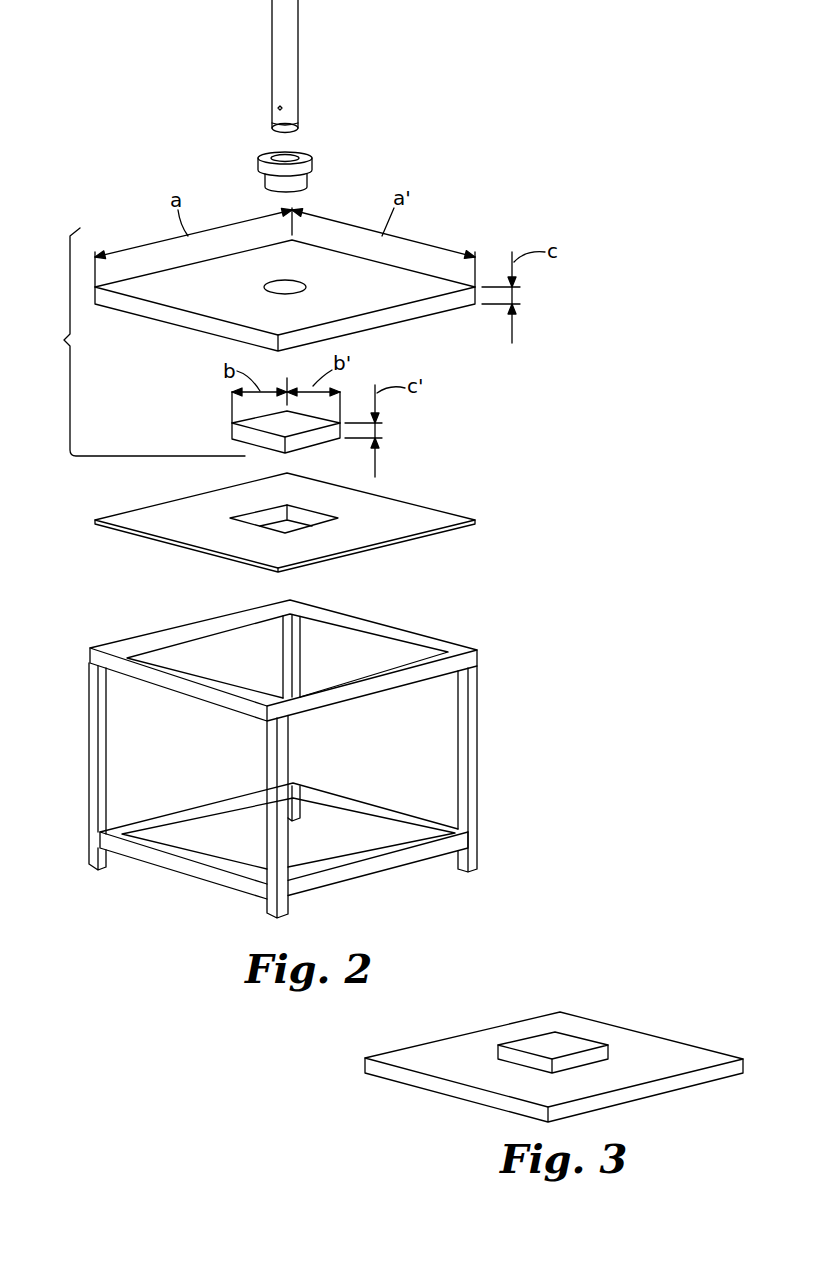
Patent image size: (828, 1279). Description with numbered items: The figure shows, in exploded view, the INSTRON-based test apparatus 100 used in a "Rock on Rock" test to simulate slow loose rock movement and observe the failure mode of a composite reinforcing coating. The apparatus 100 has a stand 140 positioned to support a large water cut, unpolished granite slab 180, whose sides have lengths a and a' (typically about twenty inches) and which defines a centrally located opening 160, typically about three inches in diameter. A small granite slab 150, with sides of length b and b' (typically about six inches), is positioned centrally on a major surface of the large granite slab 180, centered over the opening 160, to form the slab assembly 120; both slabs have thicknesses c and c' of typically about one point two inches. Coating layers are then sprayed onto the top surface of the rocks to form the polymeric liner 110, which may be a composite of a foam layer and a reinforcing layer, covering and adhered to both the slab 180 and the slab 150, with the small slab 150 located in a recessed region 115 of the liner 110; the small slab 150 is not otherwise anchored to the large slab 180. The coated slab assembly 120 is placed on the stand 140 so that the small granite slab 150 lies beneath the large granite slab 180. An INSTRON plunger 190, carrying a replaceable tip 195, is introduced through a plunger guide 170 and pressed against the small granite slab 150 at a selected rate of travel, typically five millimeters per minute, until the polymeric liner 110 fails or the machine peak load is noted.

In FIG. 2, the apparatus 100 is at (401, 78).
In FIG. 2, the polymeric liner 110 is at (437, 520).
In FIG. 2, the recessed region 115 is at (262, 515).
In FIG. 2, the slab assembly 120 is at (133, 342).
In FIG. 3, the slab assembly 120 is at (661, 955).
In FIG. 2, the stand 140 is at (427, 643).
In FIG. 2, the small granite slab 150 is at (240, 432).
In FIG. 3, the small granite slab 150 is at (568, 1042).
In FIG. 2, the opening 160 is at (275, 289).
In FIG. 2, the plunger guide 170 is at (262, 156).
In FIG. 2, the large granite slab 180 is at (437, 306).
In FIG. 3, the large granite slab 180 is at (650, 1047).
In FIG. 2, the INSTRON plunger 190 is at (291, 32).
In FIG. 2, the replaceable tip 195 is at (293, 128).